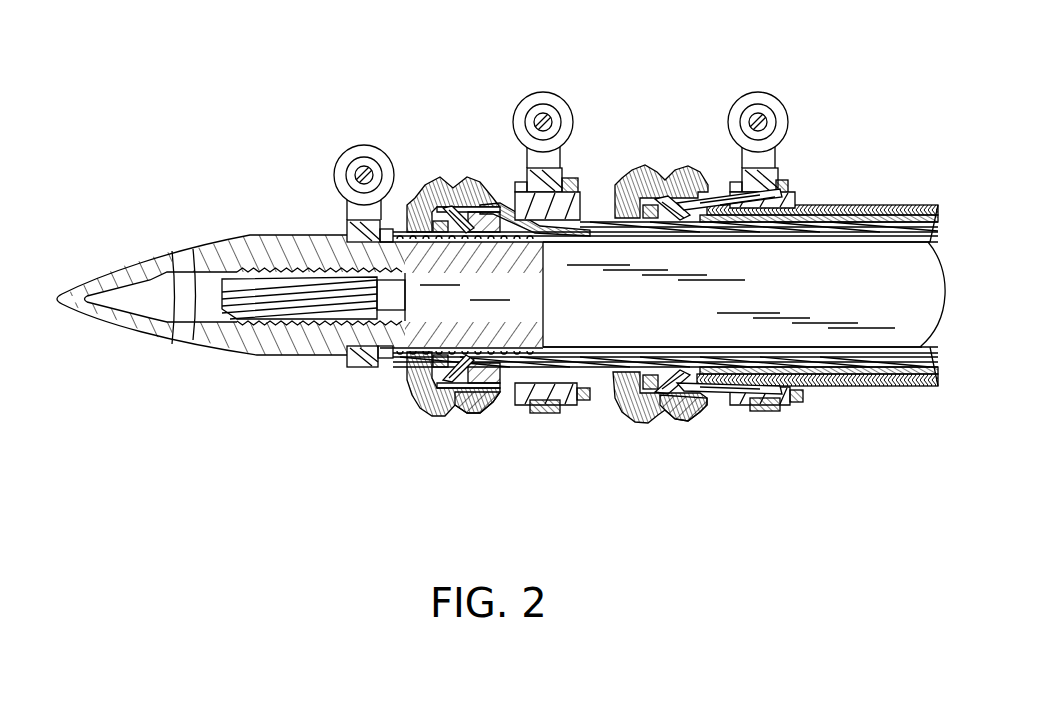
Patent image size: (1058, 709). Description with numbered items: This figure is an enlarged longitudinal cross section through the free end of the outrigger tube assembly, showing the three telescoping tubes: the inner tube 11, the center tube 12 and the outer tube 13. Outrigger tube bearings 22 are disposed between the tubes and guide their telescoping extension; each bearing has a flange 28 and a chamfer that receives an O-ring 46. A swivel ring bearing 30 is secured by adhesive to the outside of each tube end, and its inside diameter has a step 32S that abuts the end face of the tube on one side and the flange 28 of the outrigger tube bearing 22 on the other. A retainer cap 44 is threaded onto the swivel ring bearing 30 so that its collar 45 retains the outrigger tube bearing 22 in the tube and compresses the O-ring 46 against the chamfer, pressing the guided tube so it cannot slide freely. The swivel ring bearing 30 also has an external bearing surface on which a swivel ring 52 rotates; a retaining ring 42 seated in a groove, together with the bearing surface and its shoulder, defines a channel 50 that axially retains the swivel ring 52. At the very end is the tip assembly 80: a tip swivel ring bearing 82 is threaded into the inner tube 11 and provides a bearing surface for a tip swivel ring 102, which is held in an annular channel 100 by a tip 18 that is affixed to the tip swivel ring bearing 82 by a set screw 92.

The tip assembly 80 is at (301, 146).
The tip 18 is at (145, 325).
The set screw 92 is at (213, 298).
The annular channel 100 is at (343, 352).
The tip swivel ring 102 is at (347, 215).
The tip swivel ring bearing 82 is at (385, 363).
The collar 45 is at (415, 200).
The retainer cap 44 is at (422, 187).
The outrigger tube bearing 22 is at (462, 180).
The swivel ring 52 is at (573, 187).
The retaining ring 42 is at (588, 190).
The swivel ring bearing 30 is at (603, 197).
The center tube 12 is at (607, 215).
The inner tube 11 is at (903, 347).
The outer tube 13 is at (900, 388).
The channel 50 is at (587, 390).
The O-ring 46 is at (420, 400).
The flange 28 is at (447, 417).
The step 32S is at (477, 413).